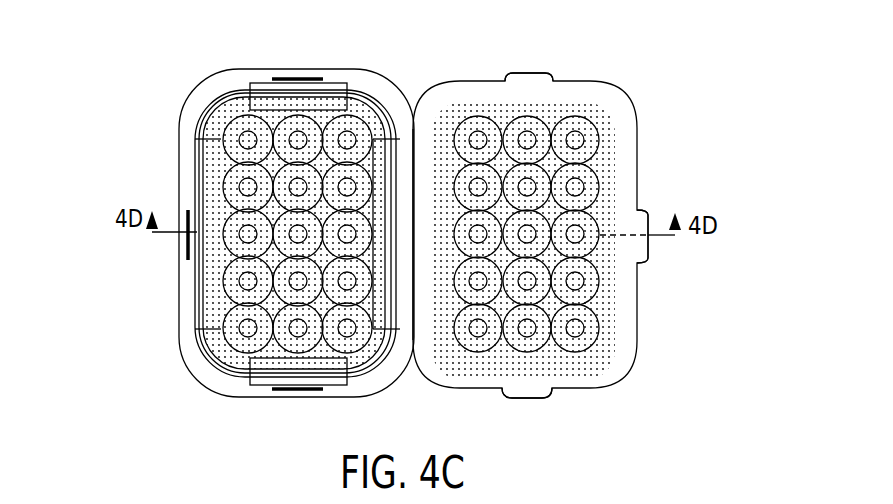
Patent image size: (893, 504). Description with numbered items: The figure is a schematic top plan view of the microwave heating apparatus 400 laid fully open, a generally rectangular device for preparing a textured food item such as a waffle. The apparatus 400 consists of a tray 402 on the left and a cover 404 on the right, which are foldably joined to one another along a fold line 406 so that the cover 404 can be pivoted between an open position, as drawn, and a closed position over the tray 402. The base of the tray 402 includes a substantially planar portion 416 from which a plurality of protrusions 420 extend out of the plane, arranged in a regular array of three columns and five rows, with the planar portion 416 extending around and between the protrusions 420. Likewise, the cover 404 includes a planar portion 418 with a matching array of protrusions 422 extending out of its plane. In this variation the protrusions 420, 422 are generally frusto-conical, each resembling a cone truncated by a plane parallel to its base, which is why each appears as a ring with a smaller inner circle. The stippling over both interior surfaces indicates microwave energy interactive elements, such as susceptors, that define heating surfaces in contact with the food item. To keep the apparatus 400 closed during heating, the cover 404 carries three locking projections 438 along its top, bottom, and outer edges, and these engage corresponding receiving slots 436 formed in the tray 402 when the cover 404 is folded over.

The microwave heating apparatus 400 is at (726, 57).
The tray 402 is at (102, 147).
The cover 404 is at (706, 160).
The fold line 406 is at (407, 314).
The planar portion of the tray base 416 is at (246, 192).
The planar portion of the cover 418 is at (597, 118).
The protrusions of the tray 420 is at (245, 136).
The protrusions of the cover 422 is at (578, 284).
The receiving slots 436 is at (305, 76).
The locking projections 438 is at (533, 76).